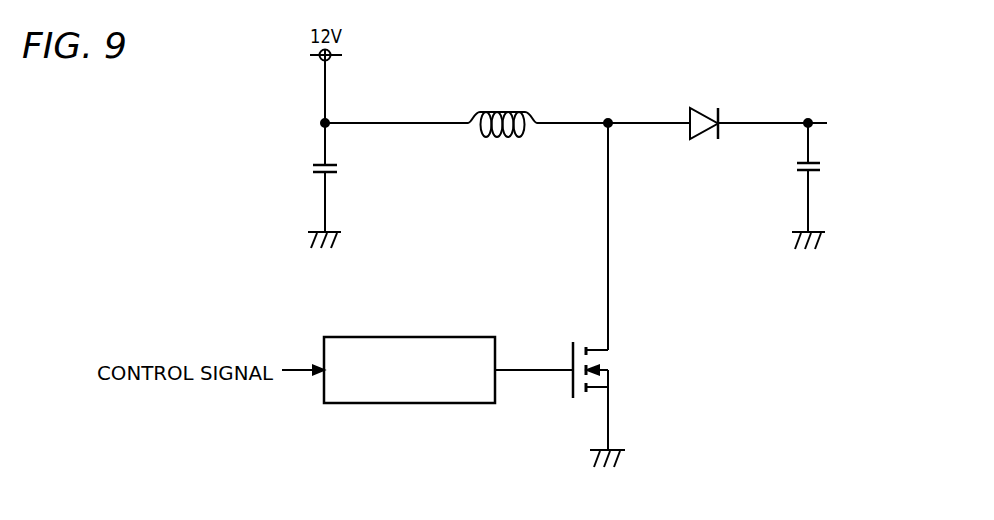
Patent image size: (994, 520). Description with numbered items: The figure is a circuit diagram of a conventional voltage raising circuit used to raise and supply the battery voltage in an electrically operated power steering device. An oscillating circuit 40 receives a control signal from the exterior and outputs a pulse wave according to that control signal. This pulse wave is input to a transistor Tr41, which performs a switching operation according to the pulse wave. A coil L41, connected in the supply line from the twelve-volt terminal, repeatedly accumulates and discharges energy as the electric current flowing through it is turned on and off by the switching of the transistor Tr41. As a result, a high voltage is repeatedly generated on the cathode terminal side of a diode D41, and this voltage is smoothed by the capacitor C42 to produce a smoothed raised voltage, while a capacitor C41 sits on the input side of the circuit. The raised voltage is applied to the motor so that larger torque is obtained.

The oscillating circuit 40 is at (413, 337).
The capacitor C41 is at (343, 185).
The capacitor C42 is at (827, 186).
The coil L41 is at (502, 110).
The diode D41 is at (705, 111).
The transistor Tr41 is at (588, 295).